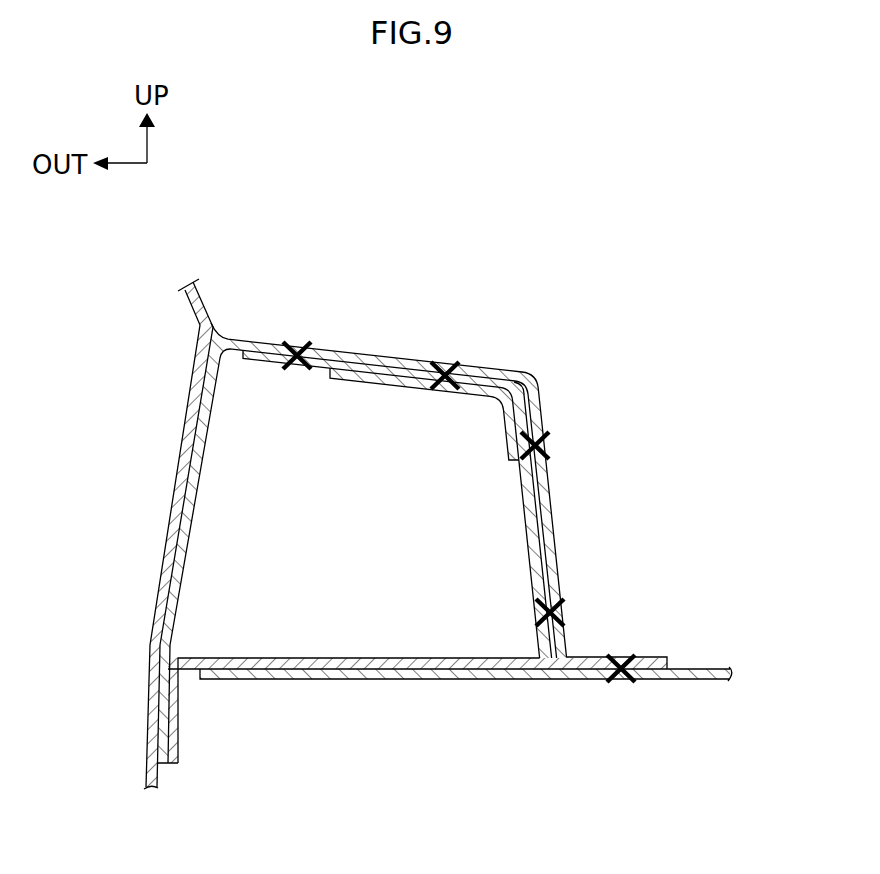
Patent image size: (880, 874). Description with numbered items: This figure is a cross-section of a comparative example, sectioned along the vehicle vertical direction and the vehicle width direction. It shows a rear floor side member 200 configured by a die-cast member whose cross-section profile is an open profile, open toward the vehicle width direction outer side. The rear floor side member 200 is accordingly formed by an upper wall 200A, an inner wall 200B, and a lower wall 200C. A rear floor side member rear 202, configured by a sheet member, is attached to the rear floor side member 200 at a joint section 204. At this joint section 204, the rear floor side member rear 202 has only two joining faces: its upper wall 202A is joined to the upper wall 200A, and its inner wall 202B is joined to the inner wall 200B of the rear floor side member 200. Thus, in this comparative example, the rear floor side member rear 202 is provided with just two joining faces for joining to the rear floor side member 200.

The rear floor side member 200 is at (450, 525).
The upper wall 200A is at (380, 387).
The inner wall 200B is at (527, 513).
The lower wall 200C is at (360, 658).
The rear floor side member rear 202 is at (450, 480).
The upper wall 202A is at (407, 362).
The inner wall 202B is at (547, 513).
The joint section 204 is at (565, 366).